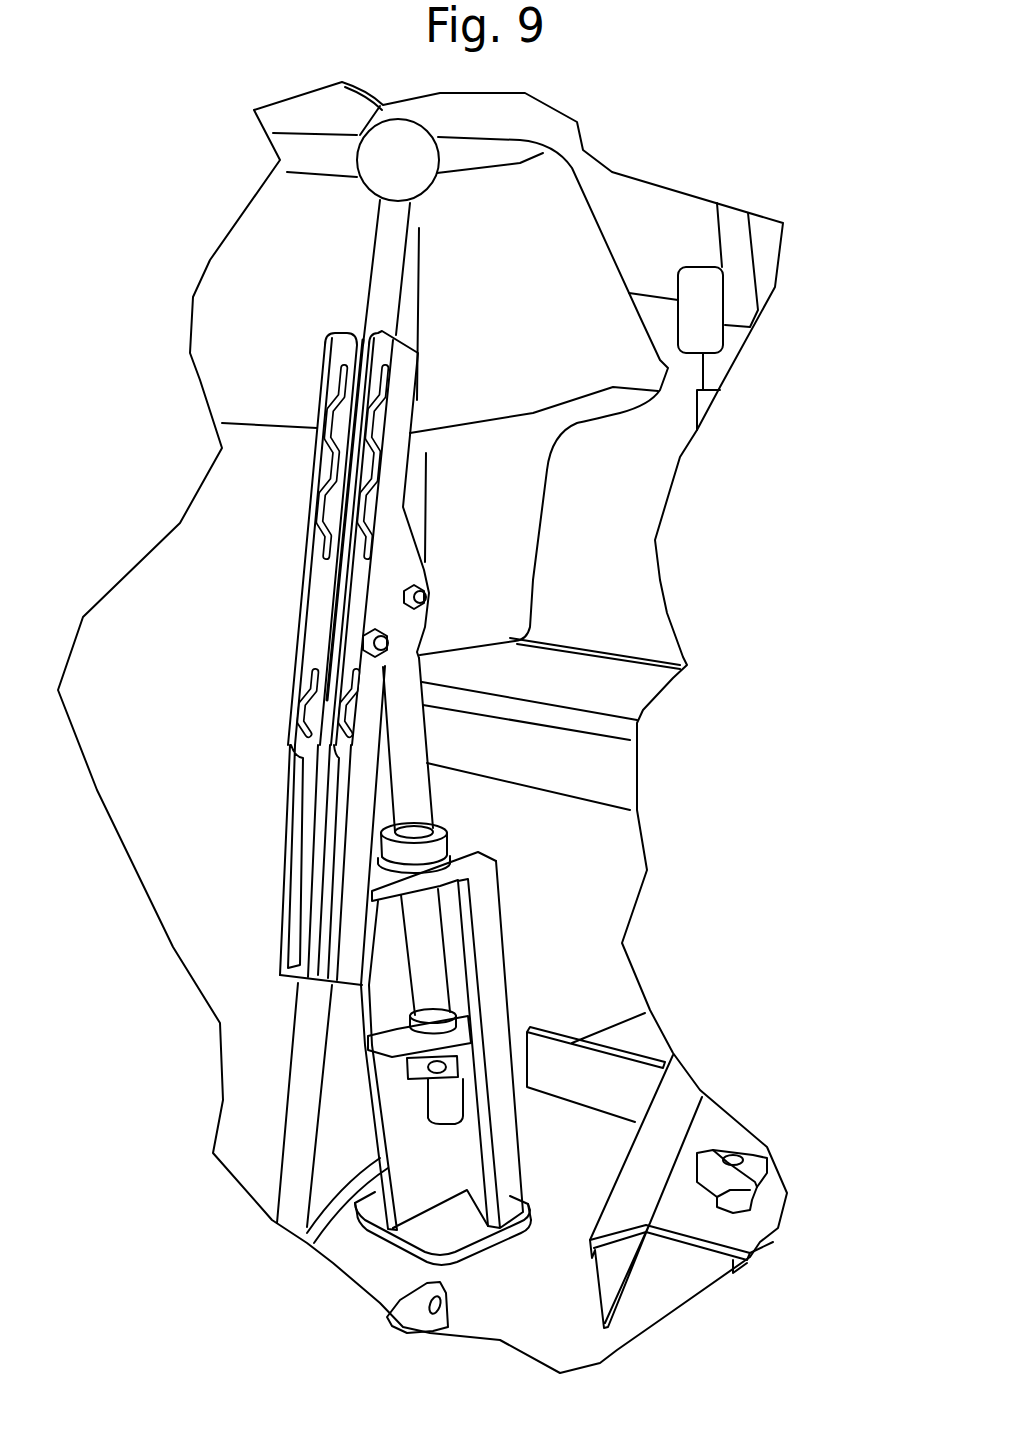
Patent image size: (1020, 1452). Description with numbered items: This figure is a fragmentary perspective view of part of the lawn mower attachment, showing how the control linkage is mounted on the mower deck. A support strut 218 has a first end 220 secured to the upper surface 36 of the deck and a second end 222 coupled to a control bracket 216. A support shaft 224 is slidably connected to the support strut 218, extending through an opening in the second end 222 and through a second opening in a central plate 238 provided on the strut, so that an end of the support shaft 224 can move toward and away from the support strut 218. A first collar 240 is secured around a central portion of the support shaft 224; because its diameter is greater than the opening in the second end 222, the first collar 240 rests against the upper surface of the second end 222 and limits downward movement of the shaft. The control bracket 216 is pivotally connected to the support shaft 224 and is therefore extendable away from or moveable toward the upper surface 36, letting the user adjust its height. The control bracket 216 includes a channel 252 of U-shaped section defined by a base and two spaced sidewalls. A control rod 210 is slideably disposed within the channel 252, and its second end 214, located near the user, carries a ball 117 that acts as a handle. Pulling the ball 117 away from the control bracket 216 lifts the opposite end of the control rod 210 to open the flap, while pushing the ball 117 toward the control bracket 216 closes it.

The upper surface 36 is at (588, 1171).
The ball 117 is at (423, 186).
The second end 214 is at (393, 272).
The channel 252 is at (356, 326).
The control bracket 216 is at (272, 708).
The control rod 210 is at (308, 1008).
The support shaft 224 is at (413, 752).
The first collar 240 is at (455, 835).
The second end 222 is at (472, 857).
The support strut 218 is at (515, 908).
The central plate 238 is at (393, 1030).
The first end 220 is at (458, 1235).